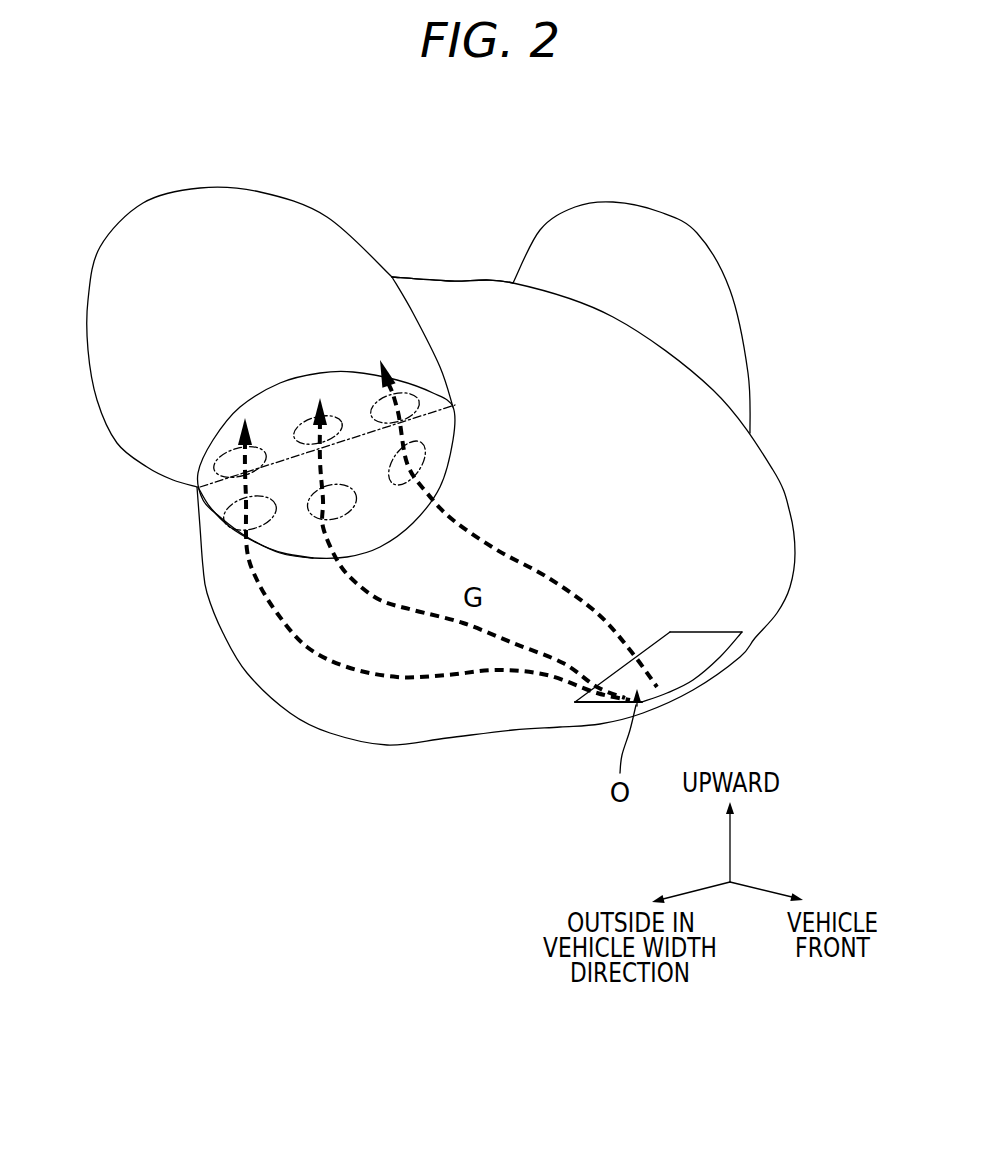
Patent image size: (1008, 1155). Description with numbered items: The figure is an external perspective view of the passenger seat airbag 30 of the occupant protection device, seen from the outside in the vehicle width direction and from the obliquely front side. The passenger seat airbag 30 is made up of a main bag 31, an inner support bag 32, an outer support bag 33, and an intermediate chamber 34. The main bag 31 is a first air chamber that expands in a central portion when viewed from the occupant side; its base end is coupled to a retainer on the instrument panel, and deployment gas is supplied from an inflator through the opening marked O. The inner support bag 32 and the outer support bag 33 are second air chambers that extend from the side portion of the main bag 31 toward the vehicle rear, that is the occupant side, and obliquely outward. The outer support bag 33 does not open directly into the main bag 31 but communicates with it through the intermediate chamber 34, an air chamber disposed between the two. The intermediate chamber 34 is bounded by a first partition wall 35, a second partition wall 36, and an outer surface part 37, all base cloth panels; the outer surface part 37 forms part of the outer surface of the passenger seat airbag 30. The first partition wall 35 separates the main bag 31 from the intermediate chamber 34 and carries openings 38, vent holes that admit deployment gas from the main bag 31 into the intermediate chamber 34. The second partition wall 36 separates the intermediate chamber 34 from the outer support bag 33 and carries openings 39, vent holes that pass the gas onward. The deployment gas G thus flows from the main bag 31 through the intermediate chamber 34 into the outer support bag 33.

The passenger seat airbag 30 is at (785, 265).
The main bag 31 is at (440, 277).
The inner support bag 32 is at (680, 218).
The outer support bag 33 is at (143, 196).
The intermediate chamber 34 is at (185, 507).
The first partition wall 35 is at (290, 533).
The second partition wall 36 is at (227, 443).
The outer surface part 37 is at (277, 407).
The openings 38 is at (320, 513).
The openings 39 is at (337, 420).